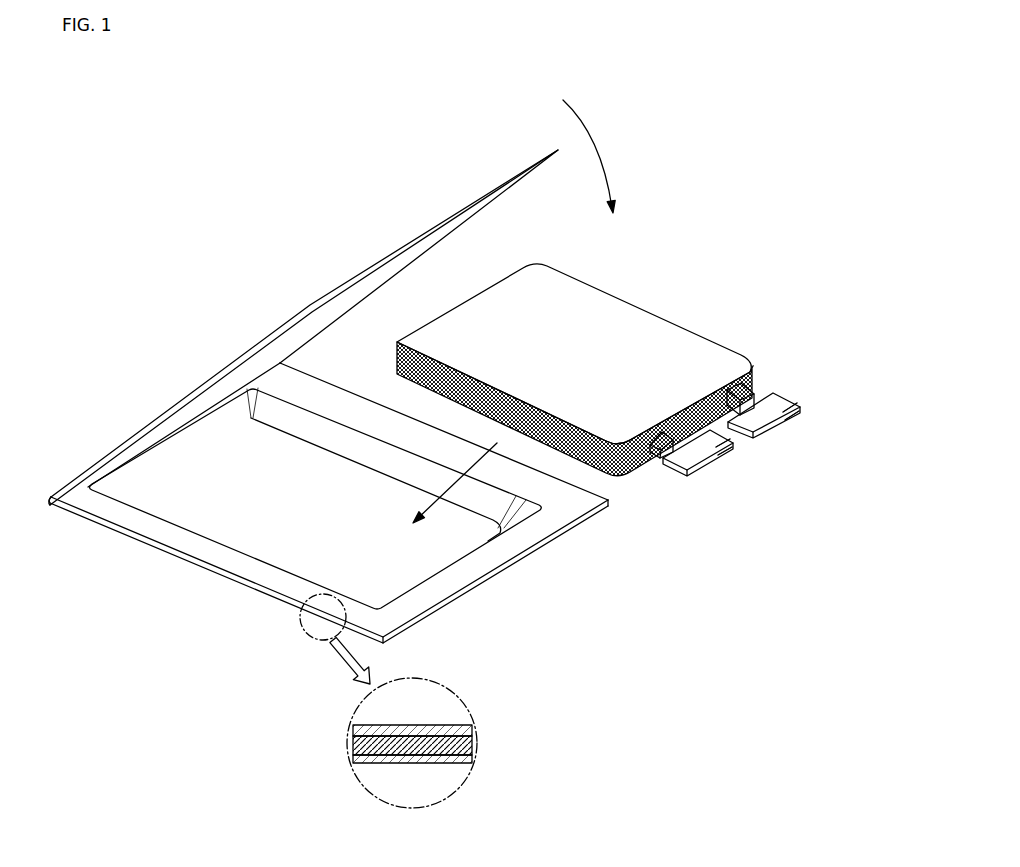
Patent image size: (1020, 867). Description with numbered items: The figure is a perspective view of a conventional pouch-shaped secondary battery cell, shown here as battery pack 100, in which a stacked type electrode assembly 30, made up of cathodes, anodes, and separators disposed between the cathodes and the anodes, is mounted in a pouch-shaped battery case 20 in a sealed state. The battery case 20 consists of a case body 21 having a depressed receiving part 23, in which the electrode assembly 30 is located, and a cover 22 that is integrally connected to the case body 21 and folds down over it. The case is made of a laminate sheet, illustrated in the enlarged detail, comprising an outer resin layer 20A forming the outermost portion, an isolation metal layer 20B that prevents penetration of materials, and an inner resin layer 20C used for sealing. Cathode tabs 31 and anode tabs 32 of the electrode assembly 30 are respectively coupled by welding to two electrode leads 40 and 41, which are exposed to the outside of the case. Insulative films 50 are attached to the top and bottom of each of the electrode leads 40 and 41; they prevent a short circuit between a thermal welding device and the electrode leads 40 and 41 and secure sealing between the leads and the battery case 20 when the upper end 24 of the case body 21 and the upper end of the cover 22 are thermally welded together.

The battery pack 100 is at (103, 149).
The battery case 20 is at (148, 362).
The case body 21 is at (248, 583).
The cover 22 is at (360, 275).
The depressed receiving part 23 is at (197, 517).
The upper end 24 is at (470, 572).
The outer resin layer 20A is at (453, 762).
The isolation metal layer 20B is at (472, 743).
The inner resin layer 20C is at (453, 730).
The electrode assembly 30 is at (655, 330).
The cathode tabs 31 is at (753, 377).
The anode tabs 32 is at (662, 448).
The electrode lead 40 is at (800, 415).
The electrode lead 41 is at (727, 463).
The insulative films 50 is at (717, 447).